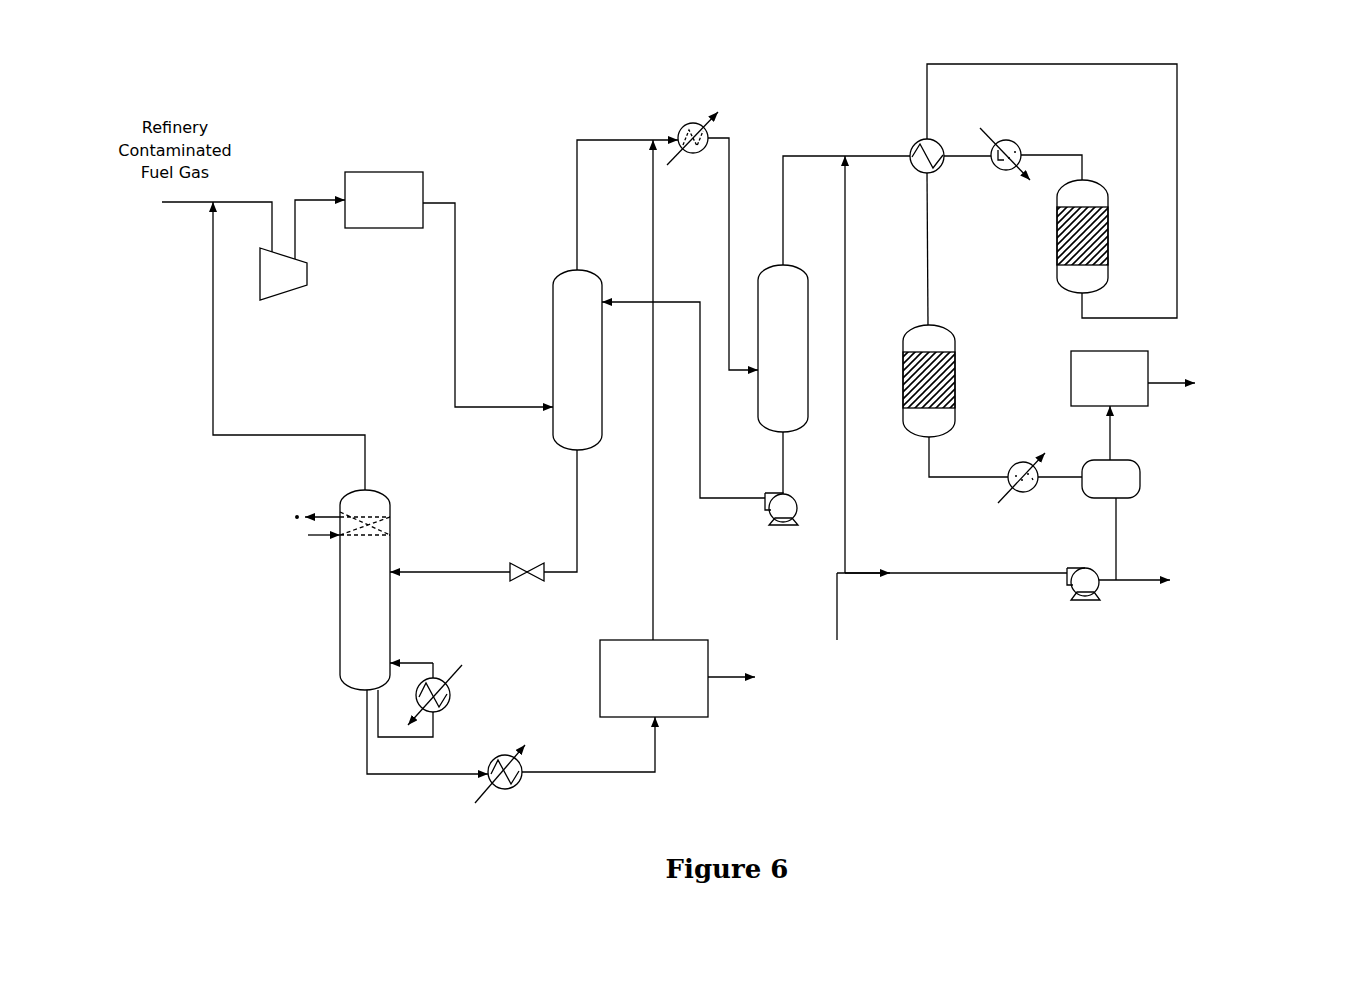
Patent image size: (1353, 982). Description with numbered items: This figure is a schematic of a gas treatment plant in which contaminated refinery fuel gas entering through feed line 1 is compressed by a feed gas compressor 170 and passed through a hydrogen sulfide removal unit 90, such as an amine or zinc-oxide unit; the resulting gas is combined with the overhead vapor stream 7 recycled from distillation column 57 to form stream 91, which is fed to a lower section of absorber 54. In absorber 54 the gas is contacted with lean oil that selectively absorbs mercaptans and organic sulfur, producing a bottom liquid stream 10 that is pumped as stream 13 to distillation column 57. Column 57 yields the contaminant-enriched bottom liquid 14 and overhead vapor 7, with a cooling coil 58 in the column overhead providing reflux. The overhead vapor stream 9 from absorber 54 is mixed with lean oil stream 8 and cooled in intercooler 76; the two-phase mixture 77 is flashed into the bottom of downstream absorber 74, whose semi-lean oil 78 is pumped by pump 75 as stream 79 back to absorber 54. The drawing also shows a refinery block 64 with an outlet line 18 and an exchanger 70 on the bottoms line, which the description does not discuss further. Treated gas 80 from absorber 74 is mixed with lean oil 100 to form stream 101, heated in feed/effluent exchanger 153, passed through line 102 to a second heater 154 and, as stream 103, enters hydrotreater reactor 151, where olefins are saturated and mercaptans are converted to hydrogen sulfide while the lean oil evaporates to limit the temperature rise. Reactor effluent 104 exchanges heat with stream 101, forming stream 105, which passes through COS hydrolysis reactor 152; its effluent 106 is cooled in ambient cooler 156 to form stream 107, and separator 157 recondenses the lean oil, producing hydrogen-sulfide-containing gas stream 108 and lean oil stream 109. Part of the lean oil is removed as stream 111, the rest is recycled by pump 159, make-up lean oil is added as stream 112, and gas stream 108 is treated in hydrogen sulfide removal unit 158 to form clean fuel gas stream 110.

The refinery contaminated fuel gas feed line 1 is at (202, 205).
The overhead vapor stream 7 is at (213, 372).
The lean oil stream 8 is at (654, 222).
The overhead vapor stream 9 is at (622, 140).
The bottom liquid stream 10 is at (580, 513).
The pumped bottom liquid stream 13 is at (460, 572).
The bottom liquid 14 is at (425, 772).
The refinery outlet line 18 is at (730, 678).
The absorber 54 is at (555, 276).
The distillation column 57 is at (390, 502).
The cooling coil 58 is at (452, 692).
The refinery 64 is at (708, 640).
The heat exchanger 70 is at (533, 750).
The downstream absorber 74 is at (786, 266).
The pump 75 is at (773, 526).
The intercooler 76 is at (683, 121).
The two-phase mixed stream 77 is at (731, 186).
The semi-lean oil 78 is at (786, 475).
The pumped semi-lean oil stream 79 is at (699, 390).
The treated gas 80 is at (800, 156).
The hydrogen sulfide removal unit 90 is at (394, 172).
The absorber feed stream 91 is at (461, 410).
The lean oil 100 is at (847, 522).
The feed gas stream 101 is at (868, 156).
The heated gas line 102 is at (963, 157).
The heated two-phase stream 103 is at (1058, 152).
The reactor effluent 104 is at (1082, 64).
The effluent stream 105 is at (928, 256).
The COS hydrolysis reactor effluent 106 is at (948, 477).
The cooled effluent stream 107 is at (1060, 479).
The hydrogen sulfide containing hydrocarbon stream 108 is at (1113, 444).
The lean oil stream 109 is at (1118, 540).
The clean gas stream 110 is at (1180, 383).
The lean oil removal stream 111 is at (1160, 580).
The lean oil make-up stream 112 is at (847, 577).
The hydrotreater reactor 151 is at (1098, 180).
The COS hydrolysis reactor 152 is at (956, 335).
The feed/effluent exchanger 153 is at (936, 141).
The second heater 154 is at (1016, 131).
The ambient cooler 156 is at (1026, 459).
The separator 157 is at (1140, 470).
The hydrogen sulfide removal unit 158 is at (1148, 356).
The pump 159 is at (1083, 567).
The feed gas compressor 170 is at (308, 266).